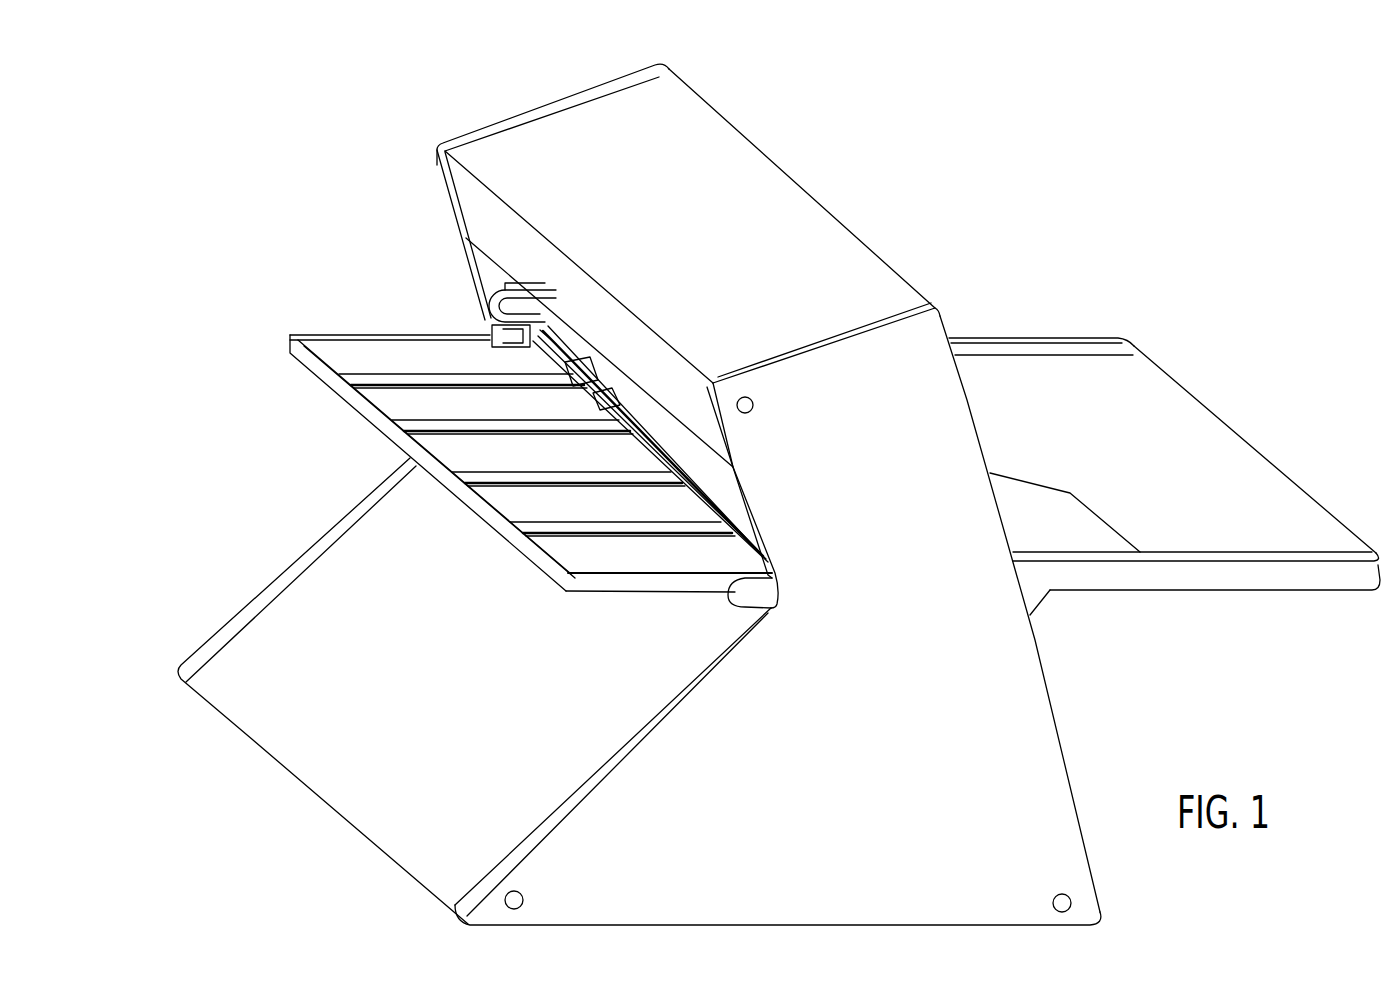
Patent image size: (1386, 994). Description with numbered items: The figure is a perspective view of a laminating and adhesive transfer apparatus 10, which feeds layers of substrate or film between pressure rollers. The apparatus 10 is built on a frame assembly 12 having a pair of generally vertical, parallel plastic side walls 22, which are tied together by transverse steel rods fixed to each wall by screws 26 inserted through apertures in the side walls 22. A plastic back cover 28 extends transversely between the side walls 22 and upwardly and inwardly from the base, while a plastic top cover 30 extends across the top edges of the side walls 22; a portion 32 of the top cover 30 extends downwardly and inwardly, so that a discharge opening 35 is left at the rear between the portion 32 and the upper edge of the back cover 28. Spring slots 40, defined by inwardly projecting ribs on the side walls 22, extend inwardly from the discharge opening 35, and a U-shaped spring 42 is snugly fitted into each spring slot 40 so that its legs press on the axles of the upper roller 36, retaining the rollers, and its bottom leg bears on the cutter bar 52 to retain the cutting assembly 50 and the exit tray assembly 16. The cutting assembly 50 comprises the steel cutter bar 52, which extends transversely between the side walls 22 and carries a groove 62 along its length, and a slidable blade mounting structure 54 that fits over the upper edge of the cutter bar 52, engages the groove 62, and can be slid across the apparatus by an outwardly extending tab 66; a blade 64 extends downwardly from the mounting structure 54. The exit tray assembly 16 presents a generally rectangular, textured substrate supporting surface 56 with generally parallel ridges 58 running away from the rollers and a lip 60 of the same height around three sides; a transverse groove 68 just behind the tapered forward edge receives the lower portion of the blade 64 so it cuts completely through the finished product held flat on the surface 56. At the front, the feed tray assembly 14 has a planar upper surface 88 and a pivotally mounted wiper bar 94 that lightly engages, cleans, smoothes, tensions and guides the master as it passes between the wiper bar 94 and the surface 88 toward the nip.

The laminating and adhesive transfer apparatus 10 is at (948, 193).
The frame assembly 12 is at (1112, 762).
The feed tray assembly 14 is at (1210, 598).
The exit tray assembly 16 is at (563, 600).
The side walls 22 is at (1018, 707).
The screws 26 is at (755, 403).
The back cover 28 is at (335, 573).
The top cover 30 is at (705, 135).
The portion of the top cover 32 is at (468, 206).
The discharge opening 35 is at (740, 480).
The upper roller 36 is at (683, 440).
The spring slots 40 is at (483, 273).
The U-shaped spring 42 is at (490, 318).
The cutting assembly 50 is at (638, 405).
The cutter bar 52 is at (553, 333).
The slidable blade mounting structure 54 is at (595, 377).
The substrate supporting surface 56 is at (510, 497).
The ridges 58 is at (396, 378).
The lip 60 is at (622, 576).
The groove 62 is at (650, 437).
The blade 64 is at (590, 400).
The tab 66 is at (548, 362).
The groove 68 is at (700, 503).
The planar upper surface 88 is at (1158, 412).
The wiper bar 94 is at (1073, 522).